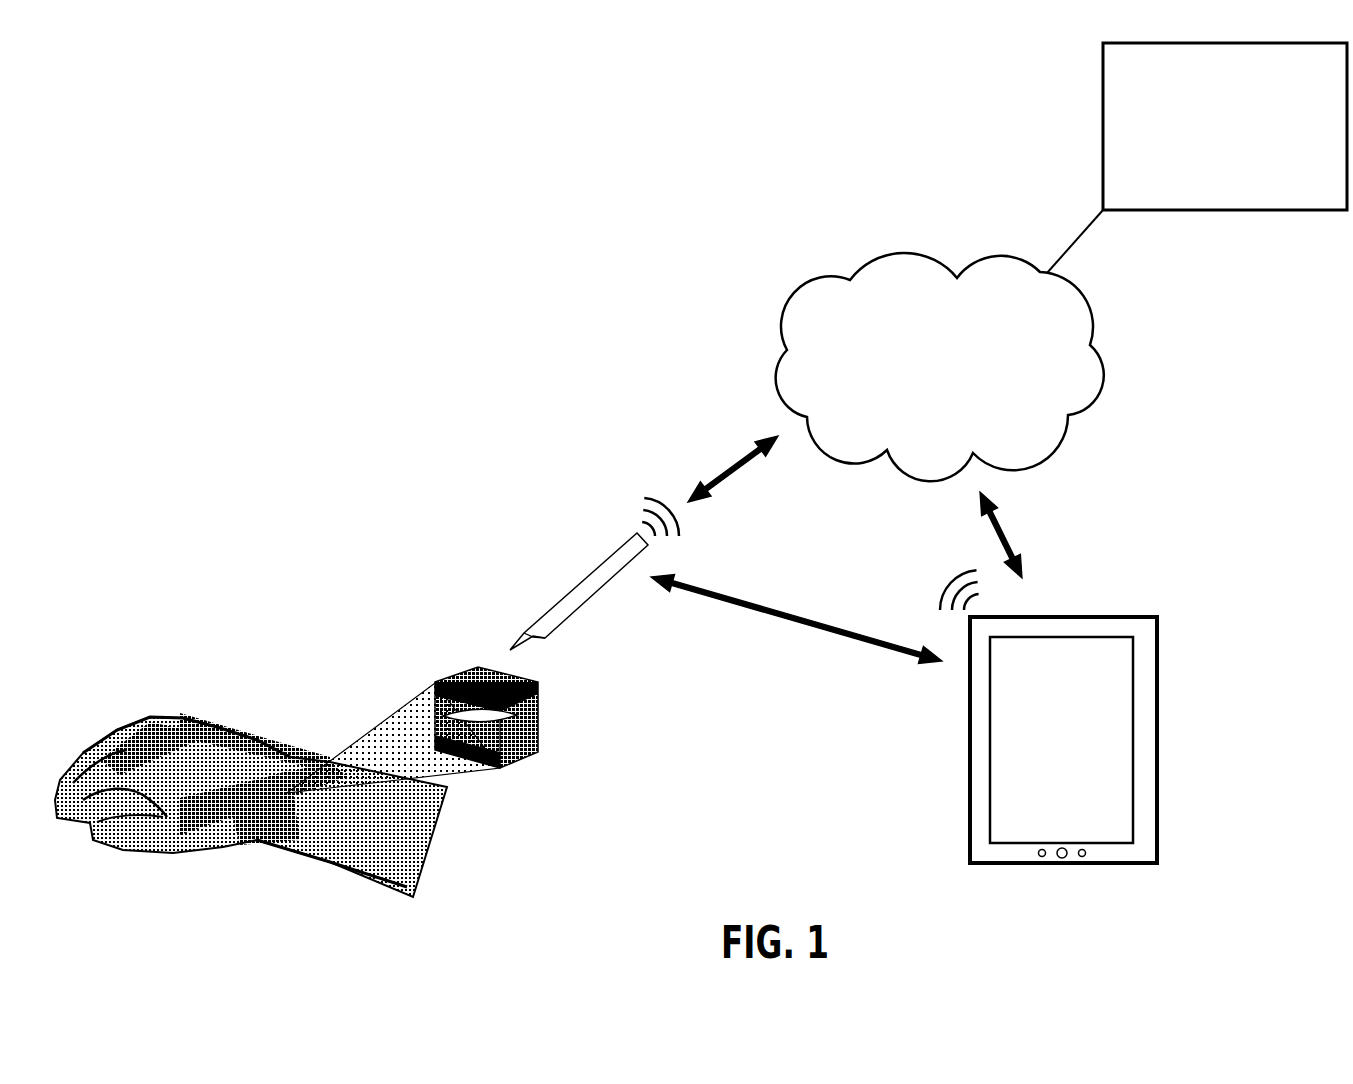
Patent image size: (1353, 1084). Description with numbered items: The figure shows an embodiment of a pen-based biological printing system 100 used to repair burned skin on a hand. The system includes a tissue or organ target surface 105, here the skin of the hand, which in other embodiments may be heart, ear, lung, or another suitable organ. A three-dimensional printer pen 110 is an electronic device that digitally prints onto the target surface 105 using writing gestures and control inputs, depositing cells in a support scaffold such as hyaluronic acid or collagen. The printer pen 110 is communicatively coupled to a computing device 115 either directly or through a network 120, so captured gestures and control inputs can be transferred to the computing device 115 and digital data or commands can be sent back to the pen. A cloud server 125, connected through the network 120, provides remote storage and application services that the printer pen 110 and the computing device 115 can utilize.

The pen-based biological printing system 100 is at (368, 180).
The tissue or organ target surface 105 is at (370, 689).
The 3D printer pen 110 is at (591, 572).
The computing device 115 is at (1123, 615).
The network 120 is at (918, 394).
The cloud server 125 is at (1248, 155).